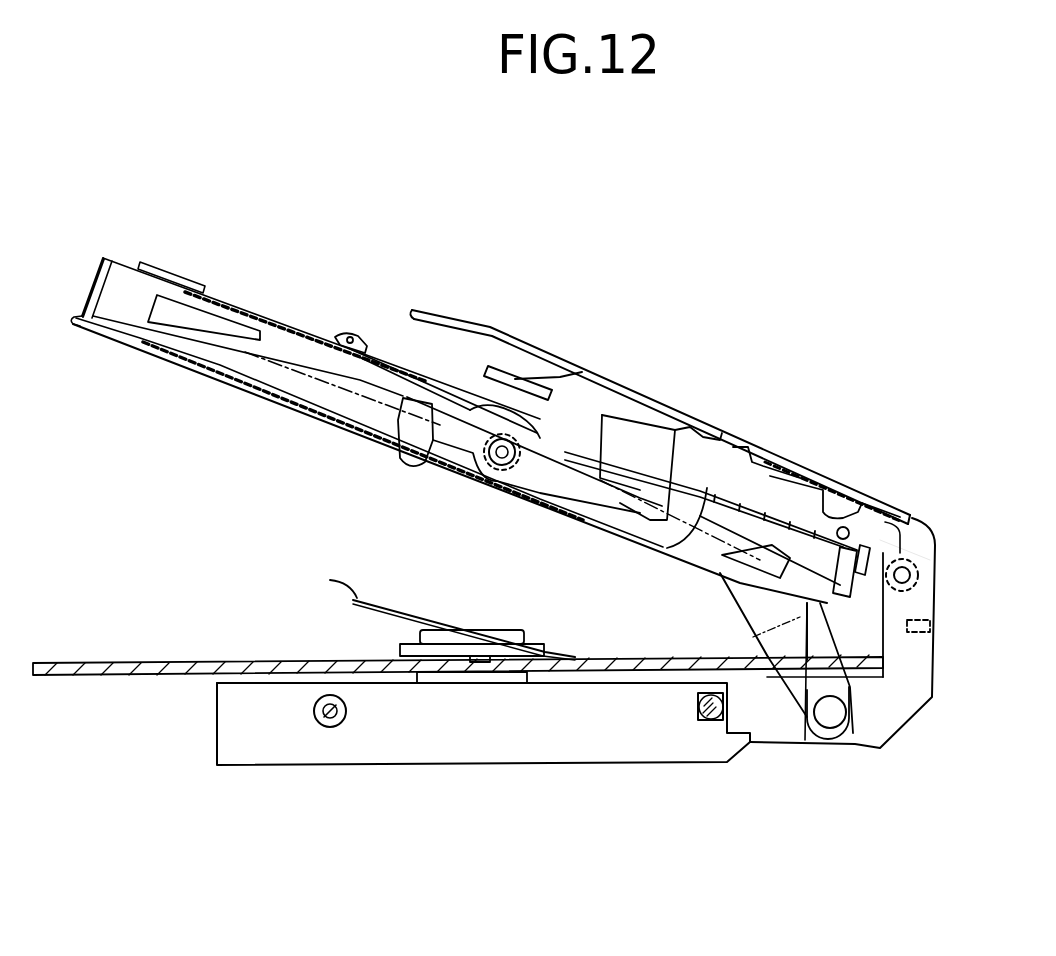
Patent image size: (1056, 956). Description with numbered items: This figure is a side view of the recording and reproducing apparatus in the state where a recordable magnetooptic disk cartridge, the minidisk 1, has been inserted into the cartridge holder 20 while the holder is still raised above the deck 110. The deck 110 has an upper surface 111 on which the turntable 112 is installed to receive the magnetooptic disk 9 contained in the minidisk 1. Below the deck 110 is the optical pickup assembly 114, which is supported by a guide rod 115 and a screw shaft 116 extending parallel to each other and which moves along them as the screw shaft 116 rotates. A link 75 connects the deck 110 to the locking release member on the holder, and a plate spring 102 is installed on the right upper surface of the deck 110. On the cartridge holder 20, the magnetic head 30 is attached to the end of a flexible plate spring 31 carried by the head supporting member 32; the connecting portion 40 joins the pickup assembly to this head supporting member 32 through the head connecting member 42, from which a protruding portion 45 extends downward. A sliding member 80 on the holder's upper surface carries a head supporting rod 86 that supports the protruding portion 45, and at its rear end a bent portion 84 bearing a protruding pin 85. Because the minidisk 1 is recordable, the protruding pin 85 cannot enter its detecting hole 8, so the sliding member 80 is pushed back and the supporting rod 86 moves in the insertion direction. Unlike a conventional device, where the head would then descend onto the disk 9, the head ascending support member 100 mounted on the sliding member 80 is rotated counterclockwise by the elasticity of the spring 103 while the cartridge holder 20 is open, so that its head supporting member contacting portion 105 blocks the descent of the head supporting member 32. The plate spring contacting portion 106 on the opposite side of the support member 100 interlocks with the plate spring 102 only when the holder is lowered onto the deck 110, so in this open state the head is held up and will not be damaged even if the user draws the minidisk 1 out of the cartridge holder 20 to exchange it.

The minidisk 1 is at (103, 258).
The cartridge holder 20 is at (196, 278).
The magnetooptic disk 9 is at (267, 323).
The magnetic head 30 is at (518, 370).
The flexible plate spring 31 is at (560, 378).
The head supporting member 32 is at (660, 392).
The head supporting member contacting portion 105 is at (703, 445).
The sliding member 80 is at (743, 457).
The protruding portion 45 is at (837, 495).
The head supporting rod 86 is at (863, 495).
The head connecting member 42 is at (920, 527).
The connecting portion 40 is at (950, 538).
The head ascending support member 100 is at (392, 432).
The plate spring contacting portion 106 is at (412, 463).
The spring 103 is at (580, 477).
The link 75 is at (748, 603).
The upper surface 111 is at (107, 662).
The deck 110 is at (82, 676).
The plate spring 102 is at (355, 598).
The turntable 112 is at (452, 640).
The optical pickup assembly 114 is at (487, 760).
The guide rod 115 is at (331, 727).
The screw shaft 116 is at (712, 725).
The detecting hole 8 is at (805, 740).
The protruding pin 85 is at (822, 608).
The bent portion 84 is at (892, 600).